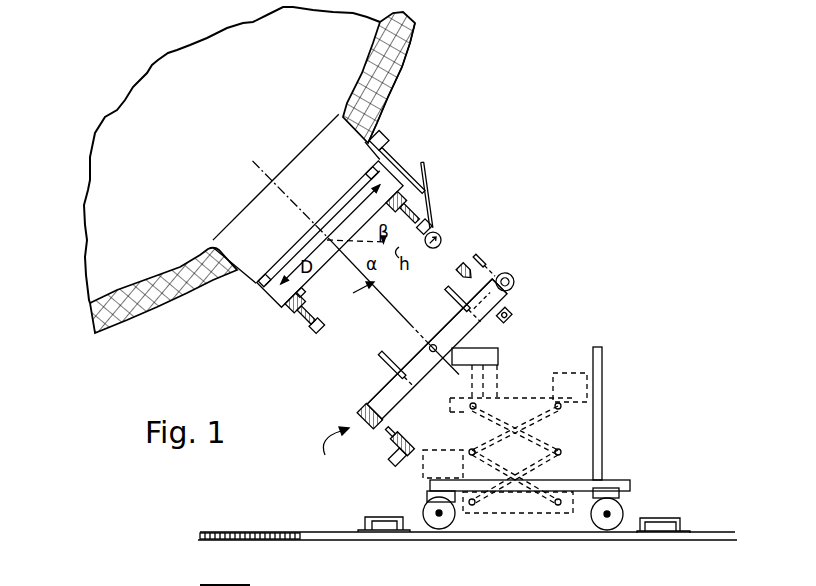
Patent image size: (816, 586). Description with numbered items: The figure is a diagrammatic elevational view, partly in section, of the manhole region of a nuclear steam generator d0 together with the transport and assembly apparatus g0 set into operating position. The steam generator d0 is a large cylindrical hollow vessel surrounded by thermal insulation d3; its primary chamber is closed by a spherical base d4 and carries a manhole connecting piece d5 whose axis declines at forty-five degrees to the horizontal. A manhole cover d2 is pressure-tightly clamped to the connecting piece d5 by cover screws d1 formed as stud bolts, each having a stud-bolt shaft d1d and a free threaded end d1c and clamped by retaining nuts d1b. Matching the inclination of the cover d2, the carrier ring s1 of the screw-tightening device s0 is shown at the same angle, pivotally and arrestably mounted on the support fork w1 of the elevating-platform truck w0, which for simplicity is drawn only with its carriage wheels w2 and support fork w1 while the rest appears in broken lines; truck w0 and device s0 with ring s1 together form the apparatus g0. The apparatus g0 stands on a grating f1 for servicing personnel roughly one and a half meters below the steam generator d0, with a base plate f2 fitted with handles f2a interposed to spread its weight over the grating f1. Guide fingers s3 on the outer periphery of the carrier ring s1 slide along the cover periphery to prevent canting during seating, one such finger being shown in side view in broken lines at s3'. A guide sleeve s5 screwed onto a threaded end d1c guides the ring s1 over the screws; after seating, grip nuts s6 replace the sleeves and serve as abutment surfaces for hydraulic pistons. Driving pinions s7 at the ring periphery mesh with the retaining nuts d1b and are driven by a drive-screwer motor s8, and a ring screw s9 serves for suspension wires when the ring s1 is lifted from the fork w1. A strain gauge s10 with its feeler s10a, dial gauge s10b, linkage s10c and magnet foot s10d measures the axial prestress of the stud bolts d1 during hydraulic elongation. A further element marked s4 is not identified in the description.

The steam generator d0 is at (107, 255).
The cover screws d1 is at (297, 322).
The retaining nuts d1b is at (287, 317).
The free threaded ends d1c is at (311, 328).
The stud-bolt shaft d1d is at (300, 294).
The manhole cover d2 is at (263, 296).
The thermal insulation d3 is at (402, 50).
The spherical base d4 is at (157, 263).
The manhole connecting piece d5 is at (381, 102).
The screw-tightening device s0 is at (510, 296).
The carrier ring s1 is at (413, 392).
The guide fingers s3 is at (427, 335).
The guide finger side view s3' is at (502, 261).
The pivot s4 is at (437, 343).
The guide sleeves s5 is at (455, 268).
The grip nuts s6 is at (512, 316).
The driving pinions s7 is at (358, 417).
The drive-screwer motor s8 is at (399, 437).
The ring screw s9 is at (512, 276).
The strain gauge s10 is at (405, 163).
The feeler s10a is at (431, 226).
The dial gauge s10b is at (443, 240).
The linkage s10c is at (426, 176).
The base s10d is at (380, 135).
The elevating-platform truck w0 is at (602, 482).
The support fork w1 is at (498, 358).
The carriage wheels w2 is at (428, 503).
The grating f1 is at (270, 532).
The base plate f2 is at (533, 533).
The handles f2a is at (380, 517).
The transport and assembly apparatus g0 is at (365, 465).